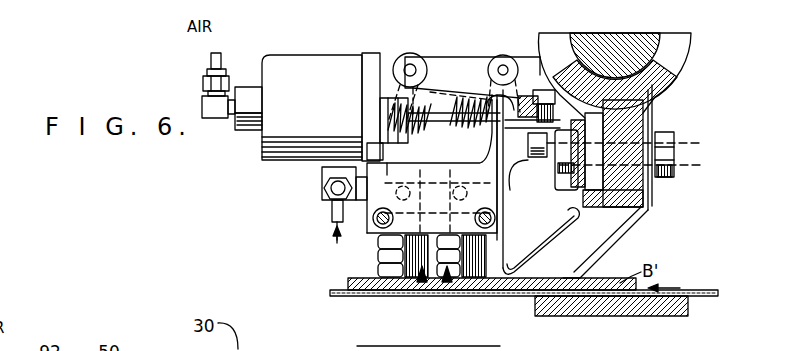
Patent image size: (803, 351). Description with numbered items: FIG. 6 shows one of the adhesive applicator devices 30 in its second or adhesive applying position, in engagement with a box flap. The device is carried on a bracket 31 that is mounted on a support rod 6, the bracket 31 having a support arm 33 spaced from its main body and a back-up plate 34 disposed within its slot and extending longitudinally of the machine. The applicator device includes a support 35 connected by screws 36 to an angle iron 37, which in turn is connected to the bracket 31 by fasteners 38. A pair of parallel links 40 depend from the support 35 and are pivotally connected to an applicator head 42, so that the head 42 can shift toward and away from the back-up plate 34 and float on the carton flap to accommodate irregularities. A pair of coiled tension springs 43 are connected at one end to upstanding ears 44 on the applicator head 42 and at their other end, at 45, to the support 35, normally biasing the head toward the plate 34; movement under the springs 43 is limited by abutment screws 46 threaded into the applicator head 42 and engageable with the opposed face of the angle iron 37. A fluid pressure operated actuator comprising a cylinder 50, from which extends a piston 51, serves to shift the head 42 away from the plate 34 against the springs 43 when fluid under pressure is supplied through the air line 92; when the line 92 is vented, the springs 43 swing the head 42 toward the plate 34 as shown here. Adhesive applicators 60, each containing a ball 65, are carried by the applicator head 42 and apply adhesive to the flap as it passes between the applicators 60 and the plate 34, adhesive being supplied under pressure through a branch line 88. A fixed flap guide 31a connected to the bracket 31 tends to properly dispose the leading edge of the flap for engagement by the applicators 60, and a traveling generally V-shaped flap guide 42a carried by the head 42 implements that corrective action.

The air line 92 is at (221, 53).
The cylinder 50 is at (333, 67).
The upstanding ears 44 is at (377, 143).
The adhesive applicator device 30 is at (300, 184).
The branch line 88 is at (330, 213).
The applicator head 42 is at (432, 166).
The coiled tension springs 43 is at (433, 142).
The piston 51 is at (432, 108).
The support 35 is at (467, 70).
The parallel links 40 is at (420, 32).
The screws 36 is at (540, 97).
The spring connection 45 is at (495, 97).
The abutment screws 46 is at (527, 157).
The angle iron 37 is at (573, 180).
The support rods 6 is at (627, 43).
The bracket 31 is at (678, 60).
The fasteners 38 is at (663, 162).
The fixed flap guide 31a is at (620, 231).
The traveling flap guide 42a is at (562, 237).
The adhesive applicators 60 is at (421, 283).
The ball 65 is at (387, 292).
The back-up plate 34 is at (710, 300).
The support arm 33 is at (660, 313).